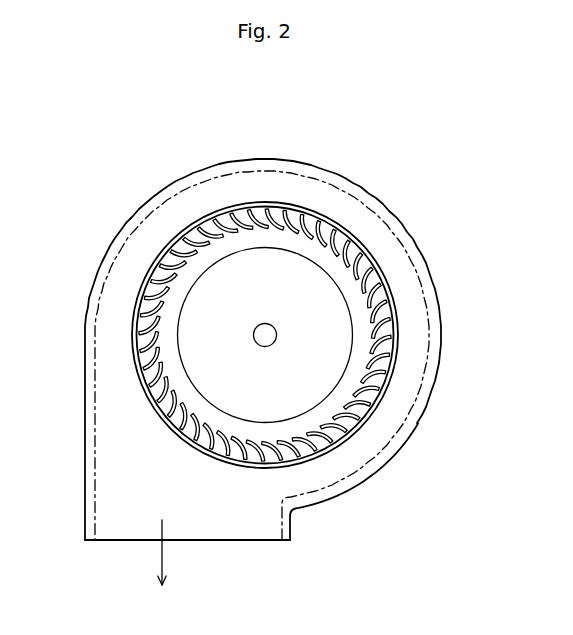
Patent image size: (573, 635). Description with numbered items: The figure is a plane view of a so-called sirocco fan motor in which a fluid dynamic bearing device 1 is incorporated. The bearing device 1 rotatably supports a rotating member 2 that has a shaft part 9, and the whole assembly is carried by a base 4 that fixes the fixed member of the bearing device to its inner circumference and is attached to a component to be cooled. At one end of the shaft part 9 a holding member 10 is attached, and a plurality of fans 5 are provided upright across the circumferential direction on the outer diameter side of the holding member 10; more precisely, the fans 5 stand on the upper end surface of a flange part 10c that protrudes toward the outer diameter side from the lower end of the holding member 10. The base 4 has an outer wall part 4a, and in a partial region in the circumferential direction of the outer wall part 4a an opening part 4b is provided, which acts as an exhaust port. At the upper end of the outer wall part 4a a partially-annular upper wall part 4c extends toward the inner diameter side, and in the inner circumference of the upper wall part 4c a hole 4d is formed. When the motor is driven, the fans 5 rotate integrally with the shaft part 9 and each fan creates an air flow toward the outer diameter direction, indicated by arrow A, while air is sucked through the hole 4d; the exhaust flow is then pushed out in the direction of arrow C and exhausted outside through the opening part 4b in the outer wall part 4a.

The fluid dynamic bearing device 1 is at (326, 217).
The rotating member 2 is at (312, 373).
The base 4 is at (438, 362).
The outer wall part 4a is at (424, 276).
The opening part 4b is at (212, 528).
The upper wall part 4c is at (357, 457).
The hole 4d is at (217, 210).
The fans 5 is at (386, 282).
The shaft part 9 is at (256, 336).
The holding member 10 is at (356, 240).
The flange part 10c is at (270, 437).
The arrow A is at (248, 192).
The arrow C is at (160, 559).